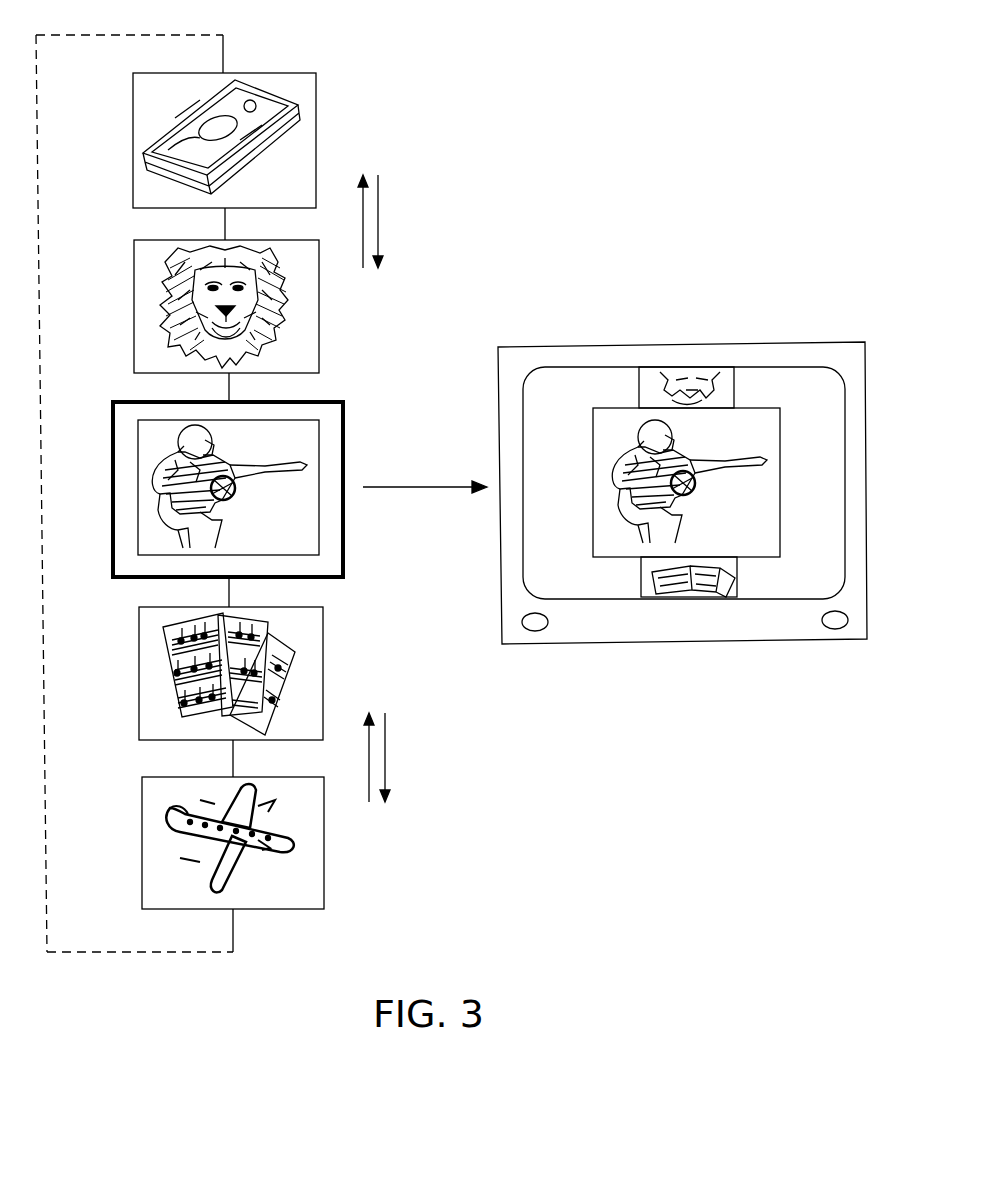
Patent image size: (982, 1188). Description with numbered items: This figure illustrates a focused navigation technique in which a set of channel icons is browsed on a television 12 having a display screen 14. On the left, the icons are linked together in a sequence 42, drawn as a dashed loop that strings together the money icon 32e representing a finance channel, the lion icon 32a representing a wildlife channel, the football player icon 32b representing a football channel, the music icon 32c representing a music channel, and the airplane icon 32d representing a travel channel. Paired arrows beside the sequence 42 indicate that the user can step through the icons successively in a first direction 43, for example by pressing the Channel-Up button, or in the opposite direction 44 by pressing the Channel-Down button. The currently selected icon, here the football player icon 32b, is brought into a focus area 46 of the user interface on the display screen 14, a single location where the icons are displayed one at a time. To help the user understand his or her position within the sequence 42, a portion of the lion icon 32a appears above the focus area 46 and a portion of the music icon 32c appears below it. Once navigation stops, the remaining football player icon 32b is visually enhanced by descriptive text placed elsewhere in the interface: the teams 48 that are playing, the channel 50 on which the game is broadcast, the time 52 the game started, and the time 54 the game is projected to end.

The television 12 is at (638, 490).
The display screen 14 is at (523, 393).
The lion icon 32a is at (134, 344).
The football player icon 32b is at (113, 533).
The music icon 32c is at (139, 709).
The airplane icon 32d is at (142, 875).
The money icon 32e is at (133, 179).
The sequence 42 is at (223, 53).
The first direction 43 is at (369, 763).
The opposite direction 44 is at (410, 763).
The focus area 46 is at (598, 408).
The teams 48 is at (530, 436).
The channel 50 is at (541, 532).
The start time 52 is at (812, 423).
The end time 54 is at (800, 544).